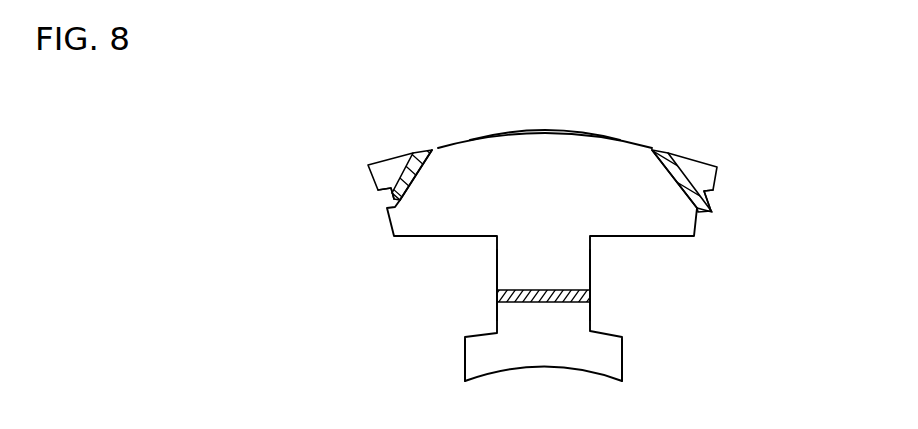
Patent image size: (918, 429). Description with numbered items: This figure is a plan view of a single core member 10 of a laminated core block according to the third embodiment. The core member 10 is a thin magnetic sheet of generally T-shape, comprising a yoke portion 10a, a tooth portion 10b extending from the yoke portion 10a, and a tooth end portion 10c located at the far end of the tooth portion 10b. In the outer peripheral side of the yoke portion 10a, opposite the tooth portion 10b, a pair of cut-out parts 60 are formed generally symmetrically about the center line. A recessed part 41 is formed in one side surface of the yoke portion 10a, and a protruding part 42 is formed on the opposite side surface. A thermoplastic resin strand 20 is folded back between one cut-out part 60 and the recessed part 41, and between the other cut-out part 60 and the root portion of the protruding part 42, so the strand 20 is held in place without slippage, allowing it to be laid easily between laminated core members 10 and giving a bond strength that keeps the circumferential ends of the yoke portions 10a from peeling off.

The core member 10 is at (493, 167).
The yoke portion 10a is at (555, 193).
The tooth portion 10b is at (550, 263).
The tooth end portion 10c is at (497, 357).
The thermoplastic resin strand 20 is at (677, 183).
The recessed part 41 is at (387, 198).
The protruding part 42 is at (723, 203).
The cut-out part 60 is at (426, 152).